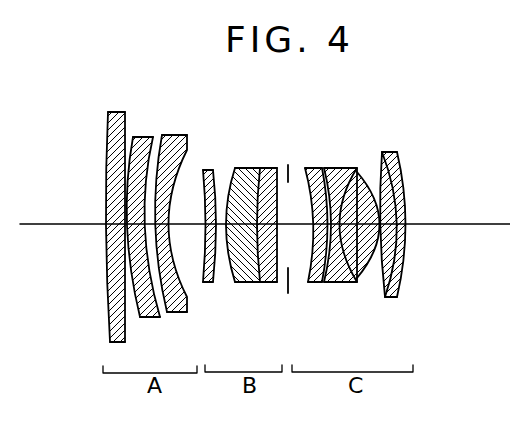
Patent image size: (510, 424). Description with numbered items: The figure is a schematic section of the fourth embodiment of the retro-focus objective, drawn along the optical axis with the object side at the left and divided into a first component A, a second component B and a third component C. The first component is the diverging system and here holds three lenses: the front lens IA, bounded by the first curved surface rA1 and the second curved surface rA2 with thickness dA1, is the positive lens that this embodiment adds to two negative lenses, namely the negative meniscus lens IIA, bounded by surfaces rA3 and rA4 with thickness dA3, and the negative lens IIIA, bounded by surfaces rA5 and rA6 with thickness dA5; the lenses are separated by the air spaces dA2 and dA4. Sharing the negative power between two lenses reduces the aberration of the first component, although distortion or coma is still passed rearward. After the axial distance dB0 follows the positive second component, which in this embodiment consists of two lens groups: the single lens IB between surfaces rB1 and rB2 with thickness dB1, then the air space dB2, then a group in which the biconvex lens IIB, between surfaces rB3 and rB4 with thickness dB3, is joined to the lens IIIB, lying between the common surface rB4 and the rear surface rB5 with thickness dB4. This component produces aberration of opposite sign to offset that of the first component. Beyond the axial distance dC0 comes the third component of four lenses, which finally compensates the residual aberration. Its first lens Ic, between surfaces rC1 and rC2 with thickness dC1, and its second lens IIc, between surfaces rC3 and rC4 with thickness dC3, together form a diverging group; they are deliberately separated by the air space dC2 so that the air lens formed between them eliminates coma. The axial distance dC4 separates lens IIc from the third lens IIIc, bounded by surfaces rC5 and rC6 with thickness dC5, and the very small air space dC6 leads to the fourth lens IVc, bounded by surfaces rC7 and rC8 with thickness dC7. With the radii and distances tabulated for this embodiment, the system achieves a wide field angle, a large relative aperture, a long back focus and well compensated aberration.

The first lens of first component A IA is at (100, 231).
The second lens of first component A IIA is at (143, 215).
The third lens of first component A IIIA is at (177, 222).
The first curved surface radius of first component rA1 is at (107, 134).
The second curved surface radius of first component rA2 is at (121, 113).
The third curved surface radius of first component rA3 is at (138, 137).
The fourth curved surface radius of first component rA4 is at (156, 137).
The fifth curved surface radius of first component rA5 is at (164, 138).
The sixth curved surface radius of first component rA6 is at (188, 137).
The axial thickness of lens IA dA1 is at (118, 219).
The axial air space between lenses IA and IIA dA2 is at (127, 230).
The axial thickness of lens IIA dA3 is at (126, 246).
The axial air space between lenses IIA and IIIA dA4 is at (135, 209).
The axial thickness of lens IIIA dA5 is at (150, 213).
The first lens of second component B IB is at (209, 237).
The second lens of second component B IIB is at (238, 214).
The third lens of second component B IIIB is at (271, 240).
The first curved surface radius of second component rB1 is at (221, 157).
The second curved surface radius of second component rB2 is at (223, 287).
The third curved surface radius of second component rB3 is at (231, 168).
The fourth curved surface radius of second component rB4 is at (260, 168).
The fifth curved surface radius of second component rB5 is at (277, 167).
The axial distance between first component A and second component B dB0 is at (163, 222).
The axial thickness of lens IB dB1 is at (200, 236).
The axial air space between lenses IB and IIB dB2 is at (225, 283).
The axial thickness of lens IIB dB3 is at (240, 200).
The axial thickness of lens IIIB dB4 is at (258, 168).
The first lens of third component C Ic is at (307, 238).
The second lens of third component C IIc is at (319, 228).
The third lens of third component C IIIc is at (363, 223).
The fourth lens of third component C IVc is at (415, 212).
The first curved surface radius of third component rC1 is at (325, 140).
The second curved surface radius of third component rC2 is at (322, 167).
The third curved surface radius of third component rC3 is at (334, 168).
The fourth curved surface radius of third component rC4 is at (356, 168).
The fifth curved surface radius of third component rC5 is at (362, 170).
The sixth curved surface radius of third component rC6 is at (382, 152).
The seventh curved surface radius of third component rC7 is at (397, 153).
The eighth curved surface radius of third component rC8 is at (401, 158).
The axial distance between second component B and third component C dC0 is at (292, 222).
The axial thickness of lens Ic dC1 is at (307, 282).
The axial air space between lenses Ic and IIc dC2 is at (388, 280).
The axial thickness of lens IIc dC3 is at (388, 178).
The axial distance between lenses IIc and IIIc dC4 is at (370, 256).
The axial thickness of lens IIIc dC5 is at (384, 200).
The axial air space between lenses IIIc and IVc dC6 is at (392, 242).
The axial thickness of lens IVc dC7 is at (399, 213).